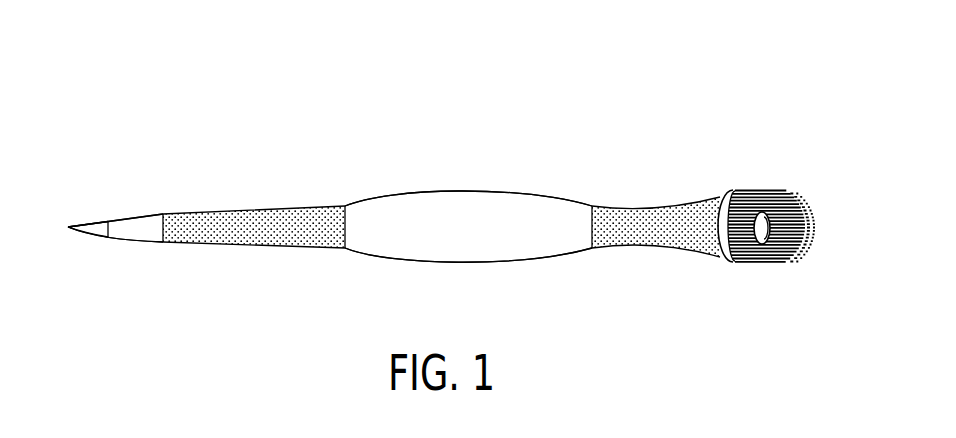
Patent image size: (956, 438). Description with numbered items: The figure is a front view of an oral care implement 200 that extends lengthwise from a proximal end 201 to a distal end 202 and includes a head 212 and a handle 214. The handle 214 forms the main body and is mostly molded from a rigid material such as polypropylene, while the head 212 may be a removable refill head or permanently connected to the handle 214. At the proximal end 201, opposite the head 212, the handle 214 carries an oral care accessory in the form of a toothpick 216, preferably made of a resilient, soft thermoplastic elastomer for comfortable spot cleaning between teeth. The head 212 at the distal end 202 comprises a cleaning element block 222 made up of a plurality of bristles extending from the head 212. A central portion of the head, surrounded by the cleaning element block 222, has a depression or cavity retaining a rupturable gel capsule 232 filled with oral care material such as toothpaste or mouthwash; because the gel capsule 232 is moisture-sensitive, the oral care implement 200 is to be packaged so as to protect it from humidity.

The oral care implement 200 is at (163, 76).
The proximal end 201 is at (68, 226).
The toothpick 216 is at (95, 228).
The handle 214 is at (367, 201).
The head 212 is at (763, 189).
The gel capsule 232 is at (771, 218).
The distal end 202 is at (804, 227).
The cleaning element block 222 is at (743, 247).